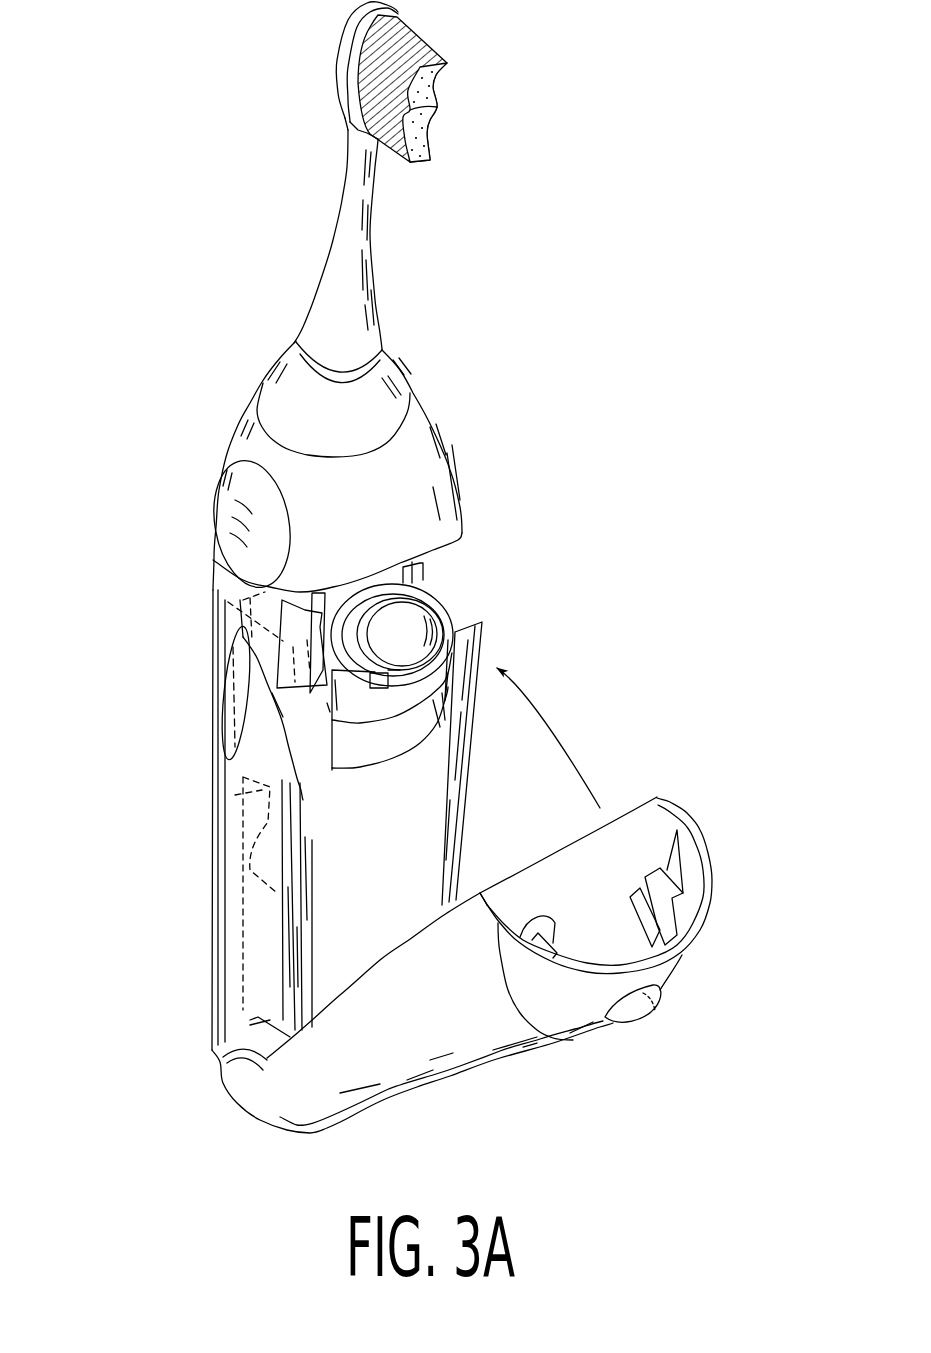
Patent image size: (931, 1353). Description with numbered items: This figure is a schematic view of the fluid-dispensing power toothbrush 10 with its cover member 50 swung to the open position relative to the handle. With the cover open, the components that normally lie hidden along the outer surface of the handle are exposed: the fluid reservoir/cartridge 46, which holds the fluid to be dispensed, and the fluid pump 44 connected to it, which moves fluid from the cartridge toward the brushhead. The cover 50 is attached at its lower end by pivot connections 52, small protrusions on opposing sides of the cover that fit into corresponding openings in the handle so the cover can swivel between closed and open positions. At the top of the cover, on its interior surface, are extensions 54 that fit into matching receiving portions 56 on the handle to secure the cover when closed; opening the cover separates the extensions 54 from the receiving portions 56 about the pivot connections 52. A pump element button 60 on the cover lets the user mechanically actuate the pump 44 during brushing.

The fluid-dispensing power toothbrush 10 is at (490, 325).
The fluid pump 44 is at (440, 597).
The fluid reservoir/cartridge 46 is at (440, 832).
The cover member 50 is at (463, 1081).
The pivot connection 52 is at (253, 1042).
The extensions 54 is at (683, 903).
The receiving portions 56 is at (250, 660).
The pump element button 60 is at (670, 1010).